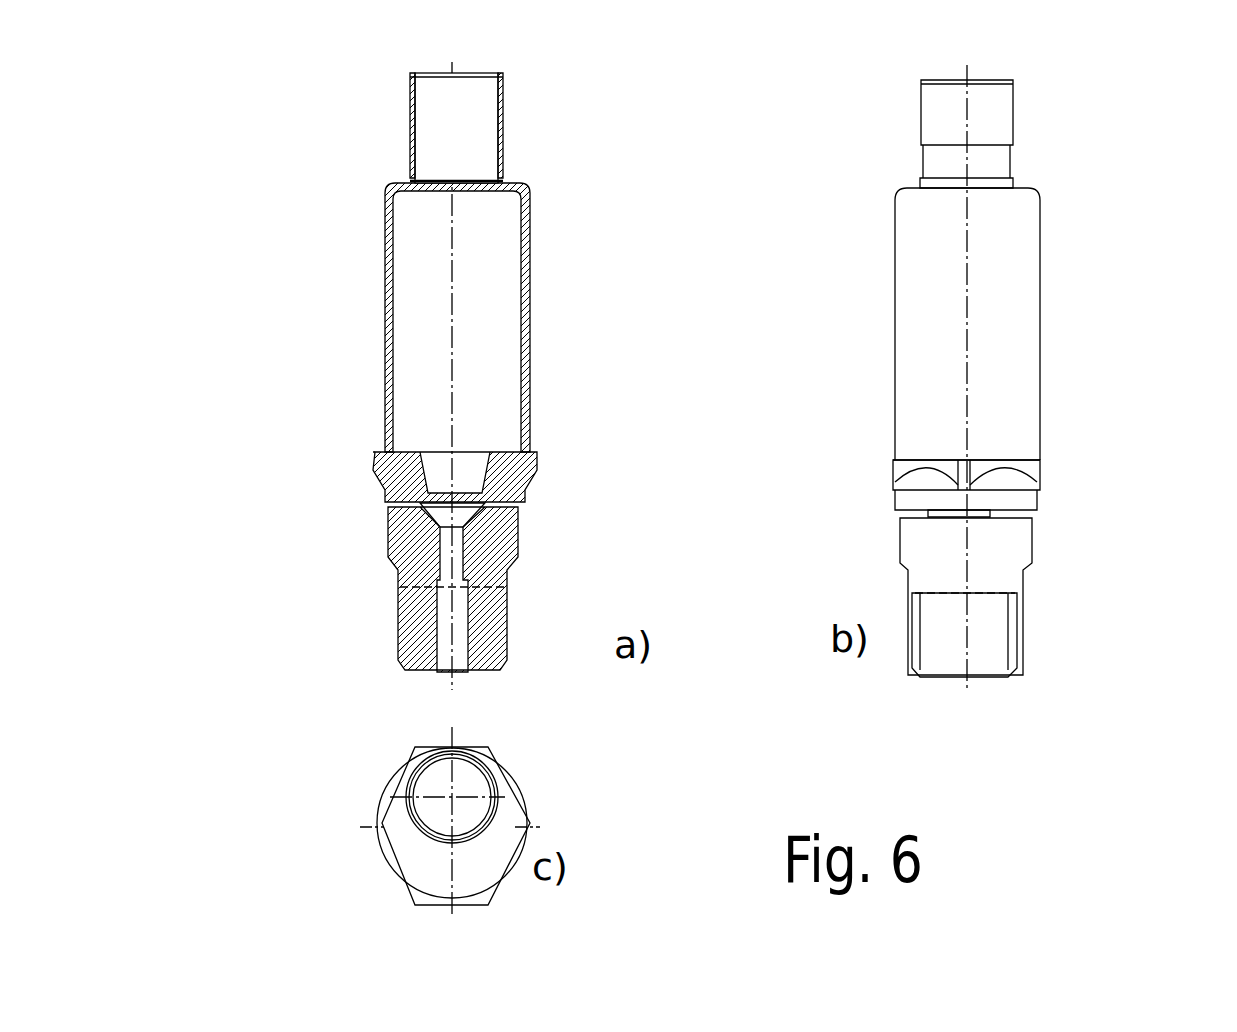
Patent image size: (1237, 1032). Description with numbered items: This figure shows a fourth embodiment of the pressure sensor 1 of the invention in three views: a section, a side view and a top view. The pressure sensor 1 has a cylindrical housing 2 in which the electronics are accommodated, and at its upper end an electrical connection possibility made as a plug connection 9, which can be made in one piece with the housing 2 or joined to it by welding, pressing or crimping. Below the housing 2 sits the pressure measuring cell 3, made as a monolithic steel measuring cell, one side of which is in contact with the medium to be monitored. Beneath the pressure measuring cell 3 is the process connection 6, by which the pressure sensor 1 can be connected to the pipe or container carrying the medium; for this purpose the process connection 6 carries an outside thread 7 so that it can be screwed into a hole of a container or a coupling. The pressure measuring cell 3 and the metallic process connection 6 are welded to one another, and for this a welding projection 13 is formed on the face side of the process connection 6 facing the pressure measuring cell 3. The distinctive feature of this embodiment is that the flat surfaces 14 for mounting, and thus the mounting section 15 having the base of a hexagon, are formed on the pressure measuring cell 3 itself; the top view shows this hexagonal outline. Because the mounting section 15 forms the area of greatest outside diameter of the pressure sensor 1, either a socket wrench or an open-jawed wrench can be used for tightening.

The pressure sensor 1 is at (612, 208).
The housing 2 is at (385, 258).
The pressure measuring cell 3 is at (385, 490).
The process connection 6 is at (364, 628).
The outside thread 7 is at (1010, 653).
The plug connection 9 is at (410, 93).
The welding projection 13 is at (487, 512).
The flat surfaces 14 is at (1143, 412).
The mounting section 15 is at (355, 447).